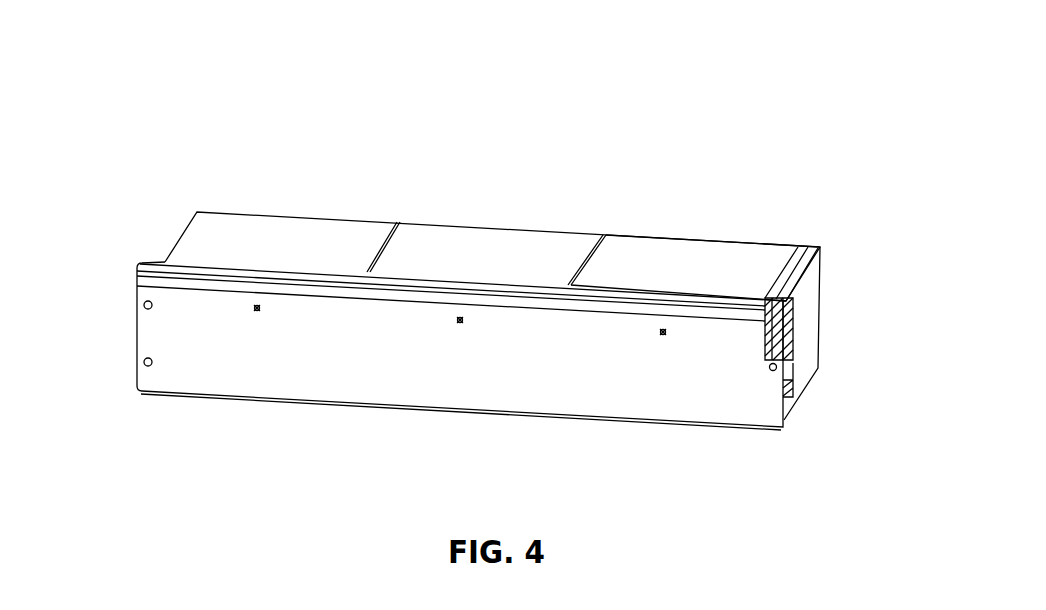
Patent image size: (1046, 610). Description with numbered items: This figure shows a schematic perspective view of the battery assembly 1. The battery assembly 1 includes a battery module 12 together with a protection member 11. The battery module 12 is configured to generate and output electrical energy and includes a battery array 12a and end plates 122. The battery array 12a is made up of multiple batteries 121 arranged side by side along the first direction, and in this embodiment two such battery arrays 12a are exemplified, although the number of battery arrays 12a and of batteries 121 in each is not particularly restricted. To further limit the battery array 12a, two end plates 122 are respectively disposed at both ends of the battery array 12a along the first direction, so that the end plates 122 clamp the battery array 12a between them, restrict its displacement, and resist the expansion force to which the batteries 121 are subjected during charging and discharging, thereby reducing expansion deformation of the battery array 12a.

The battery assembly 1 is at (550, 138).
The protection member 11 is at (242, 365).
The battery module 12 is at (152, 230).
The battery array 12a is at (495, 228).
The battery 121 is at (712, 257).
The end plate 122 is at (808, 310).